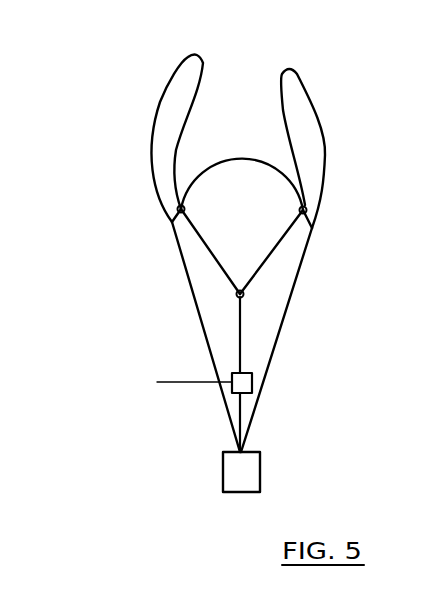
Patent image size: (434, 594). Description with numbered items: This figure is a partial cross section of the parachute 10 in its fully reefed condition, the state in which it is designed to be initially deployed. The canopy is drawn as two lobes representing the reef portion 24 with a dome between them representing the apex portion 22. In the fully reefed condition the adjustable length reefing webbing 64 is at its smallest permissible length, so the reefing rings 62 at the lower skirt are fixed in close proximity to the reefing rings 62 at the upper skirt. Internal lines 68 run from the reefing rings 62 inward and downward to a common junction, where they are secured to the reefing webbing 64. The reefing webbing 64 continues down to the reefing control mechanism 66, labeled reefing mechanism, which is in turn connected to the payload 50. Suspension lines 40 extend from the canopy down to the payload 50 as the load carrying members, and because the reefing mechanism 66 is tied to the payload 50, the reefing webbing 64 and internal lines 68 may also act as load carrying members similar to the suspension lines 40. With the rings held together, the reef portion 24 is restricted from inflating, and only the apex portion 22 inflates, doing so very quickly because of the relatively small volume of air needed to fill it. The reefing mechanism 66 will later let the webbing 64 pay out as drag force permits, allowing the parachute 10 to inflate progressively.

The parachute 10 is at (148, 92).
The apex portion 22 is at (273, 166).
The reef portion 24 is at (316, 112).
The suspension lines 40 is at (277, 342).
The payload 50 is at (260, 470).
The reefing rings 62 is at (309, 208).
The adjustable length reefing webbing 64 is at (240, 314).
The reefing control mechanism 66 is at (252, 383).
The internal lines 68 is at (268, 258).